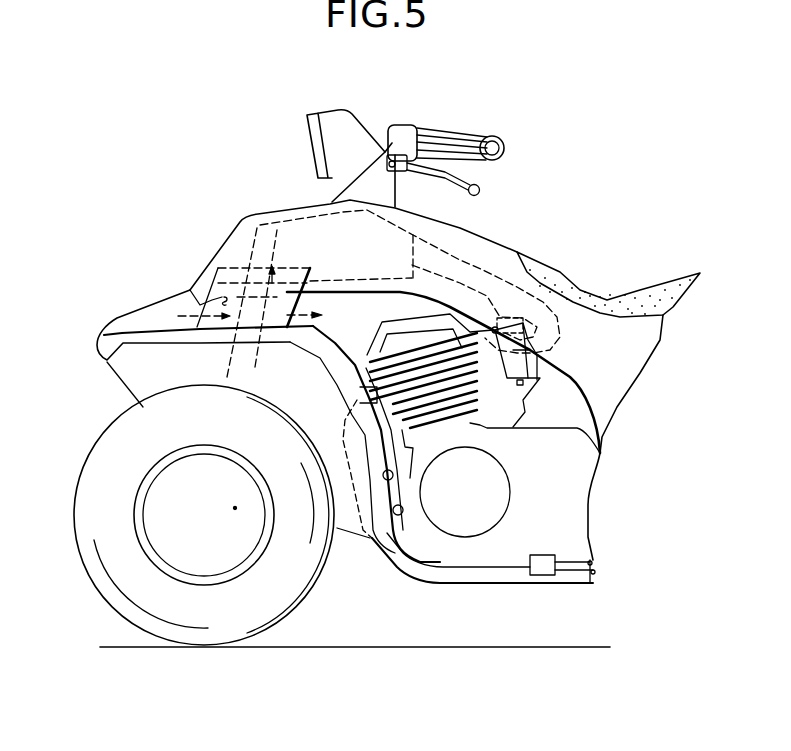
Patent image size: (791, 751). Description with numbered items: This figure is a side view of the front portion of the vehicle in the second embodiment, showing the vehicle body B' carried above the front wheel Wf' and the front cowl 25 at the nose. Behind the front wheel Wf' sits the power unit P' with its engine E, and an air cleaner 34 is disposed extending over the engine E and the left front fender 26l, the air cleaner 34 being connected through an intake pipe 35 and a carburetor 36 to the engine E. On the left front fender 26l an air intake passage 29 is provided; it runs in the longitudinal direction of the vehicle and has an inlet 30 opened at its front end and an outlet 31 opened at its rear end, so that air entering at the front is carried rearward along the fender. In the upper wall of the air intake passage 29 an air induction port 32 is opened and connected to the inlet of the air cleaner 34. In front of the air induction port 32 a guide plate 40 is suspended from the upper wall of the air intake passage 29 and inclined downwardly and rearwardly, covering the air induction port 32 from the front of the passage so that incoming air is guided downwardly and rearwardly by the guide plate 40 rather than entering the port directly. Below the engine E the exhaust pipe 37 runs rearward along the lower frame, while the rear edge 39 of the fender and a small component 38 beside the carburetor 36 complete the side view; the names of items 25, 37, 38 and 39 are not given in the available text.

The front fairing 25 is at (159, 303).
The inlet 30 is at (195, 291).
The guide plate 40 is at (264, 263).
The outlet 31 is at (312, 286).
The air cleaner 34 is at (414, 235).
The intake pipe 35 is at (483, 265).
The air intake passage 29 is at (235, 305).
The air induction port 32 is at (258, 304).
The left front fender 26l is at (276, 333).
The fender rear edge 39 is at (357, 400).
The ignition coil 38 is at (500, 367).
The carburetor 36 is at (538, 382).
The engine E is at (518, 432).
The vehicle body B' is at (493, 406).
The front wheel Wf' is at (186, 515).
The power unit P' is at (419, 581).
The exhaust pipe 37 is at (498, 583).